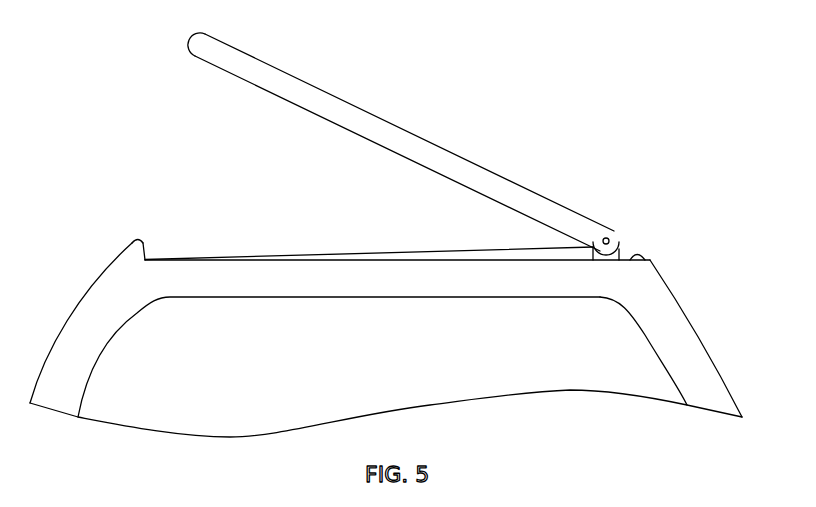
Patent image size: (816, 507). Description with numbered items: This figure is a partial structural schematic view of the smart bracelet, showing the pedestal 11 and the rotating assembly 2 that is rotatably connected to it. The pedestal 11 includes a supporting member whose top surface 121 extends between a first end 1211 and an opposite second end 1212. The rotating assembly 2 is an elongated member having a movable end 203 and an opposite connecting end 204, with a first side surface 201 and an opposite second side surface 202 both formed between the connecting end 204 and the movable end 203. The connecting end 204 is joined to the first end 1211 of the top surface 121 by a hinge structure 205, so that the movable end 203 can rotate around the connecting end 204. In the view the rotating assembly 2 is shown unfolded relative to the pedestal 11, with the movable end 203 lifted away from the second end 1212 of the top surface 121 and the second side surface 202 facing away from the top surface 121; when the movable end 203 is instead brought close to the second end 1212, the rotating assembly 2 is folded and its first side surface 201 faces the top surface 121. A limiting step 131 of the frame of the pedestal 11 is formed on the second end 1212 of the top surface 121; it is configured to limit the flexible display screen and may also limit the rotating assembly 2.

The rotating assembly 2 is at (437, 117).
The first side surface 201 is at (292, 104).
The second side surface 202 is at (307, 82).
The movable end 203 is at (197, 46).
The connecting end 204 is at (610, 236).
The hinge structure 205 is at (618, 245).
The pedestal 11 is at (358, 287).
The top surface 121 is at (313, 253).
The limiting step 131 is at (137, 252).
The first end 1211 is at (594, 249).
The second end 1212 is at (147, 261).